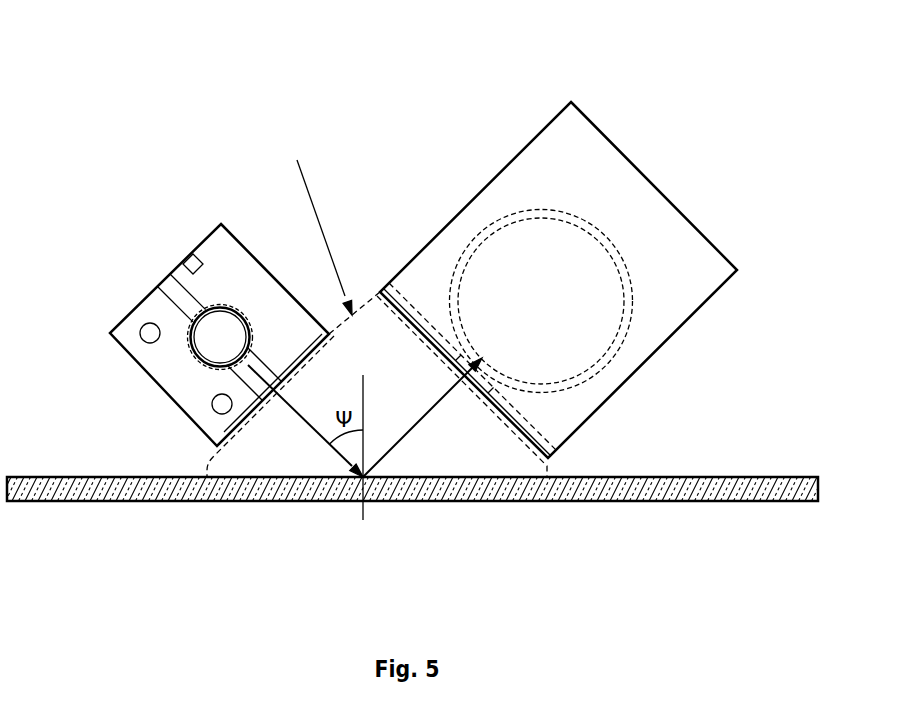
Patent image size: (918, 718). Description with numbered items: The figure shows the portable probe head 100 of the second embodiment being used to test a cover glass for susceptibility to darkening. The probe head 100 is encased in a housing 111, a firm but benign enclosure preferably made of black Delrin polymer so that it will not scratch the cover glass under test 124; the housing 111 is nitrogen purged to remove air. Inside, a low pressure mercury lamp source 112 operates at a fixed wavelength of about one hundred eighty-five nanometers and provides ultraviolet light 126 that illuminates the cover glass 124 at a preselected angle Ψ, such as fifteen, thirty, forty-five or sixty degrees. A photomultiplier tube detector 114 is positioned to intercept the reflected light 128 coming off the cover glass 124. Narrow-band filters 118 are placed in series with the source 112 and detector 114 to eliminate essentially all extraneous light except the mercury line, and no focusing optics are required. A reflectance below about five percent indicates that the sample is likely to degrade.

The portable probe head 100 is at (632, 33).
The housing 111 is at (332, 253).
The low pressure mercury lamp source 112 is at (208, 233).
The photomultiplier tube (PMT) detector 114 is at (713, 242).
The narrow-band filters 118 is at (213, 445).
The cover glass under test 124 is at (622, 503).
The ultraviolet light 126 is at (293, 412).
The reflected light 128 is at (418, 420).